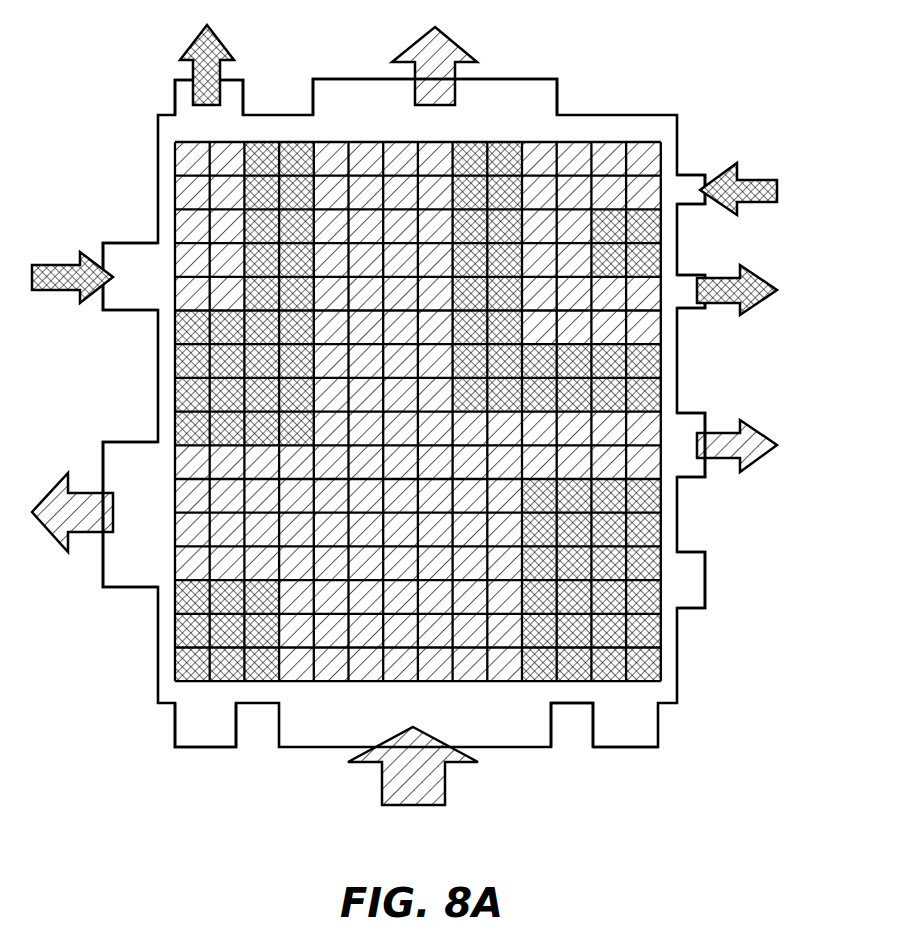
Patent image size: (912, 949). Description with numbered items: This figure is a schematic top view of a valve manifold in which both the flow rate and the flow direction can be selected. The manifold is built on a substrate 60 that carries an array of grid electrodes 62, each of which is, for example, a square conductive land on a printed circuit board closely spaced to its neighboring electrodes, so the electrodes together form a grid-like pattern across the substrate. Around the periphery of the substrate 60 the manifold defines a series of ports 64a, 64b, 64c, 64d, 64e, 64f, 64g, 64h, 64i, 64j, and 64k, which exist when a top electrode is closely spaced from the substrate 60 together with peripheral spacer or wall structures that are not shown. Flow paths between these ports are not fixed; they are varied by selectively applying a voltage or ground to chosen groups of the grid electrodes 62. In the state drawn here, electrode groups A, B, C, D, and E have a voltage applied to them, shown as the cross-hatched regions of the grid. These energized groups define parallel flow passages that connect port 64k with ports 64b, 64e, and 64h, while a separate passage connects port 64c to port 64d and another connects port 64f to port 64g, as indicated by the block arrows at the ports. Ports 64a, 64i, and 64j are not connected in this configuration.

The substrate 60 is at (157, 697).
The grid electrodes 62 is at (175, 362).
The port 64a is at (182, 735).
The port 64b is at (117, 585).
The port 64c is at (125, 250).
The port 64d is at (183, 80).
The port 64e is at (517, 84).
The port 64f is at (690, 177).
The port 64g is at (688, 306).
The port 64h is at (690, 477).
The port 64i is at (690, 607).
The port 64j is at (643, 740).
The port 64k is at (527, 740).
The electrode group A is at (185, 667).
The electrode group B is at (175, 398).
The electrode group C is at (650, 229).
The electrode group D is at (638, 327).
The electrode group E is at (650, 655).